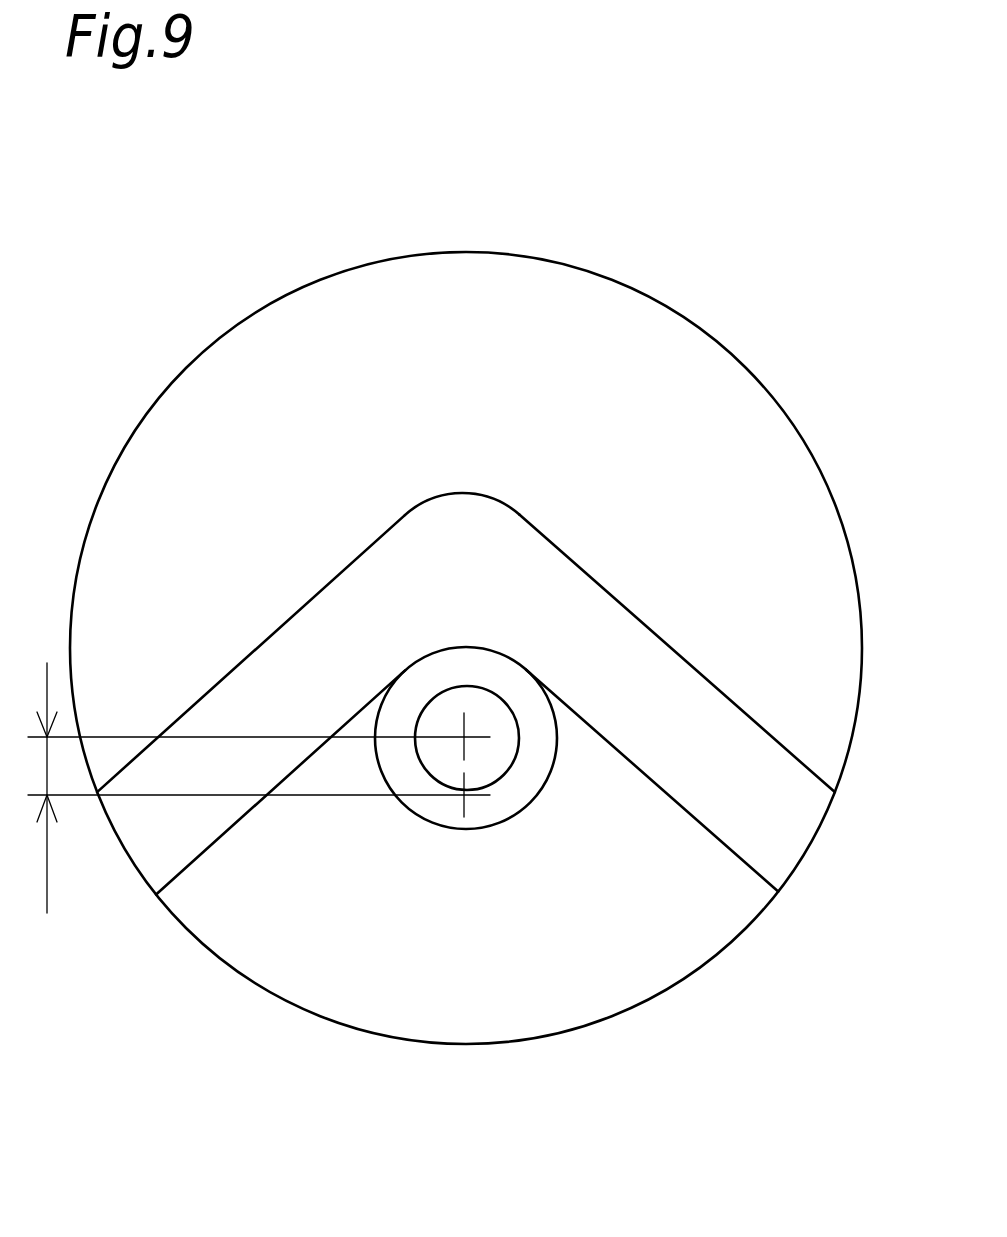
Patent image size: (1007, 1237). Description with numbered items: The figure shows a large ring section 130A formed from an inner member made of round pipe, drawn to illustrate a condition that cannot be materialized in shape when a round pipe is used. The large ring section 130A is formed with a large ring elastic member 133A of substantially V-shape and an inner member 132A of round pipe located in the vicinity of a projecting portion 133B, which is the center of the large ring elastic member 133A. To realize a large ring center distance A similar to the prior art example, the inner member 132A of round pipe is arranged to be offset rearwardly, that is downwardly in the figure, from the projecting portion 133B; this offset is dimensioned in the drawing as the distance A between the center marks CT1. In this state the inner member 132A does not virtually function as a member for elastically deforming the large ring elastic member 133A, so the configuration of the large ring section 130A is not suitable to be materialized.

The large ring section 130A is at (198, 332).
The large ring elastic member 133A is at (273, 647).
The projecting portion 133B is at (470, 517).
The inner member 132A is at (537, 772).
The center CT1 is at (463, 797).
The large ring center distance A is at (49, 804).